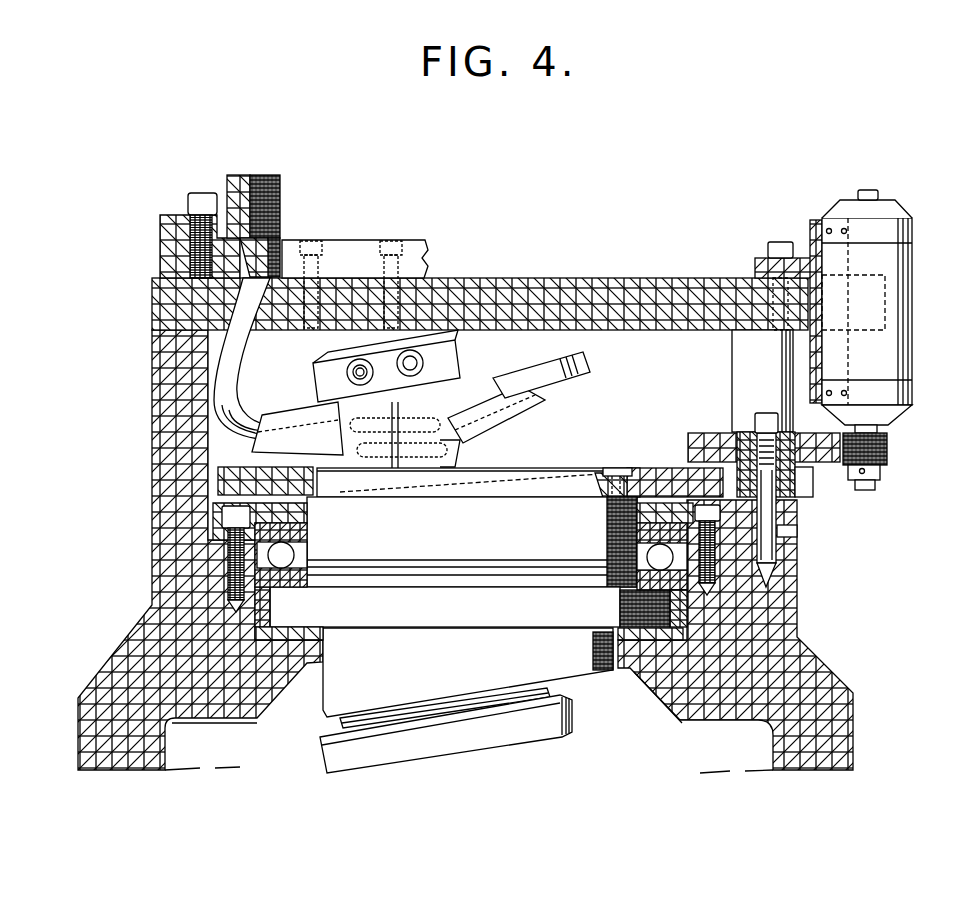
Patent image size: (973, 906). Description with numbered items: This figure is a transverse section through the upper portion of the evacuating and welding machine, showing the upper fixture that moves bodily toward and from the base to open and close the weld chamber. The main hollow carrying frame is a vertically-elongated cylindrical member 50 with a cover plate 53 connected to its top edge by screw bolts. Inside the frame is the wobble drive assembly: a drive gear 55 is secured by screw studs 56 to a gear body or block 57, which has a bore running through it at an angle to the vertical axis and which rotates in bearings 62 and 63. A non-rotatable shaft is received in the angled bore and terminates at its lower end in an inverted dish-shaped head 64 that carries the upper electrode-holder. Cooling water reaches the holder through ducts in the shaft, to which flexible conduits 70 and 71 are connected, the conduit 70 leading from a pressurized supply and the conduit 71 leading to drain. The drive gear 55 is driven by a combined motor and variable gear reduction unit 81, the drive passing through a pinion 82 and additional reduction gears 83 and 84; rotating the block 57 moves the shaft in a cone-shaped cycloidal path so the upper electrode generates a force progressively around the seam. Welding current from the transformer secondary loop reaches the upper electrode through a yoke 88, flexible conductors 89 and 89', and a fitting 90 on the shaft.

The cylindrical member 50 is at (783, 657).
The cover plate 53 is at (620, 278).
The drive gear 55 is at (233, 475).
The screw studs 56 is at (627, 467).
The gear body 57 is at (500, 539).
The bearing 62 is at (302, 535).
The bearing 63 is at (268, 608).
The inverted dish-shaped head 64 is at (540, 727).
The flexible conduit 70 is at (413, 362).
The flexible conduit 71 is at (347, 375).
The combined motor and variable gear reduction unit 81 is at (908, 340).
The pinion 82 is at (888, 447).
The reduction gear 83 is at (840, 455).
The reduction gear 84 is at (802, 493).
The yoke 88 is at (425, 258).
The flexible conductor 89 is at (278, 315).
The flexible conductor 89' is at (562, 375).
The fitting 90 is at (493, 380).